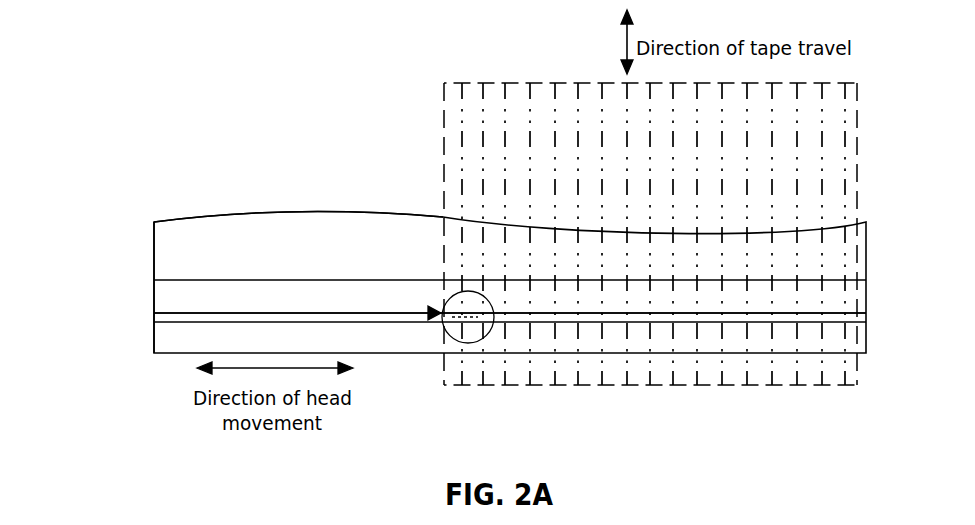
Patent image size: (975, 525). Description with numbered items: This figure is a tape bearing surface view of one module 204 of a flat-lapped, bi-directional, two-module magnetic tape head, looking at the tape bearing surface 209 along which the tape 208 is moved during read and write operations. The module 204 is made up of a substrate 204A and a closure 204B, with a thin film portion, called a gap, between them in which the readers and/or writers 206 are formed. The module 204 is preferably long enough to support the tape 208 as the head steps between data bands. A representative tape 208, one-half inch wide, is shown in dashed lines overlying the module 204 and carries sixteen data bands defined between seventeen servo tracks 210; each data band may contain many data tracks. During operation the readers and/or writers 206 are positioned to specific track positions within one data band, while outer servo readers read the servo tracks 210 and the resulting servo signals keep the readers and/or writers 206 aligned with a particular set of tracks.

The module 204 is at (196, 197).
The substrate 204A is at (290, 210).
The closure 204B is at (153, 340).
The readers and/or writers 206 is at (432, 313).
The tape 208 is at (444, 84).
The tape bearing surface 209 is at (348, 300).
The servo tracks 210 is at (553, 164).